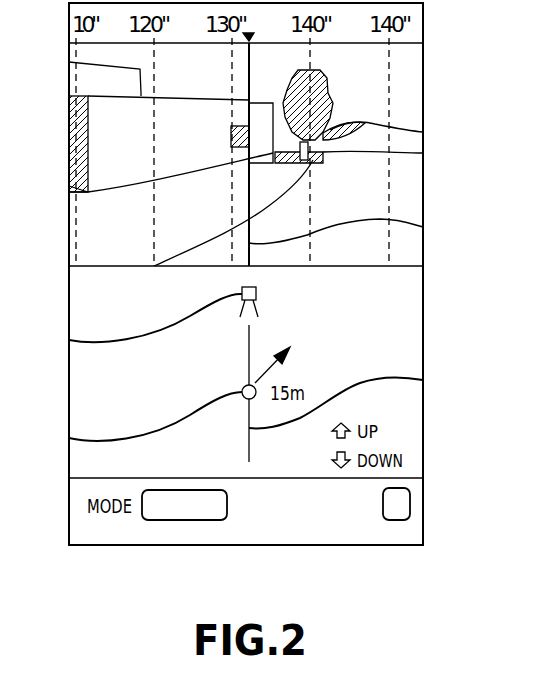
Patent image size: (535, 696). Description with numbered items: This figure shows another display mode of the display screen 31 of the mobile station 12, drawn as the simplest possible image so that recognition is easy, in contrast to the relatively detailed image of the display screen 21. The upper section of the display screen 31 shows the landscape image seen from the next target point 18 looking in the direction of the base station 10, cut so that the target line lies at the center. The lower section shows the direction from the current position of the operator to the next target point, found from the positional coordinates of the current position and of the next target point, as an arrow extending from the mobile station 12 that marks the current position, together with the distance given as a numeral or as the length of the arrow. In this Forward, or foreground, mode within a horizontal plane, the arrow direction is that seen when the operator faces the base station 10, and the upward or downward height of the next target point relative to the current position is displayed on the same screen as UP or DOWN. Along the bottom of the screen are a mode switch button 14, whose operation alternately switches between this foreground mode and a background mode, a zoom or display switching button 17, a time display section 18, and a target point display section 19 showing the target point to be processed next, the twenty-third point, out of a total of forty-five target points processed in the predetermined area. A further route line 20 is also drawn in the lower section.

The base station 10 is at (69, 340).
The mobile station 12 is at (69, 438).
The mode switch button 14 is at (158, 520).
The zoom button 17 is at (410, 503).
The time display section 18 is at (315, 538).
The target point display section 19 is at (272, 495).
The route line 20 is at (423, 380).
The display screen 21 is at (423, 227).
The display screen 31 is at (423, 307).